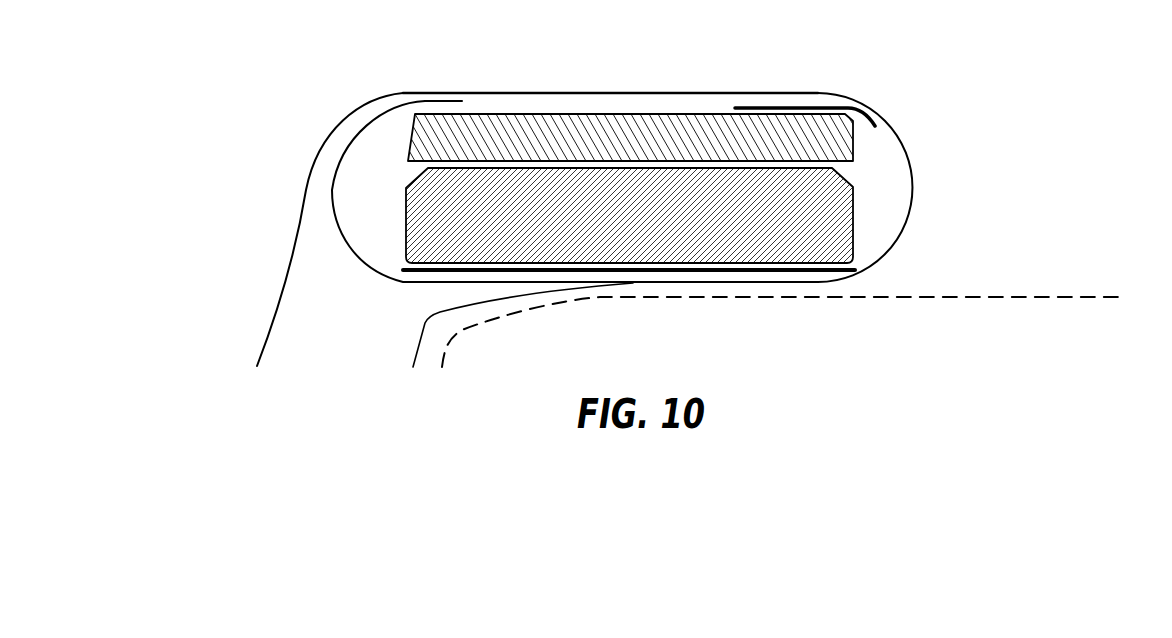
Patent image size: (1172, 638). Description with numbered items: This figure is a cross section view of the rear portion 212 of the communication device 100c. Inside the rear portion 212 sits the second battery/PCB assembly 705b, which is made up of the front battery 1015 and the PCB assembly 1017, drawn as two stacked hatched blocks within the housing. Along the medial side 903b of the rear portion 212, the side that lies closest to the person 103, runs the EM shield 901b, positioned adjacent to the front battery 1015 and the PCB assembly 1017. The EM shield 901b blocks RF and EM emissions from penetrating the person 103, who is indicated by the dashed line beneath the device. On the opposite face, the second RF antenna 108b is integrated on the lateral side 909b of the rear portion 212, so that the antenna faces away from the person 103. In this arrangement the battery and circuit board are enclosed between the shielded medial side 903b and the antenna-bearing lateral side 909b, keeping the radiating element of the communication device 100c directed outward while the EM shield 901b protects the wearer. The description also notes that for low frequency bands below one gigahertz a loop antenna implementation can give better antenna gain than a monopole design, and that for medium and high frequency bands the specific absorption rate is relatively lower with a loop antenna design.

The communication device 100c is at (401, 90).
The rear portion 212 is at (467, 92).
The lateral side 909b is at (593, 92).
The second RF antenna 108b is at (787, 107).
The second battery/PCB assembly 705b is at (381, 178).
The PCB assembly 1017 is at (652, 148).
The front battery 1015 is at (652, 228).
The EM shield 901b is at (778, 275).
The medial side 903b is at (560, 285).
The person 103 is at (1095, 297).